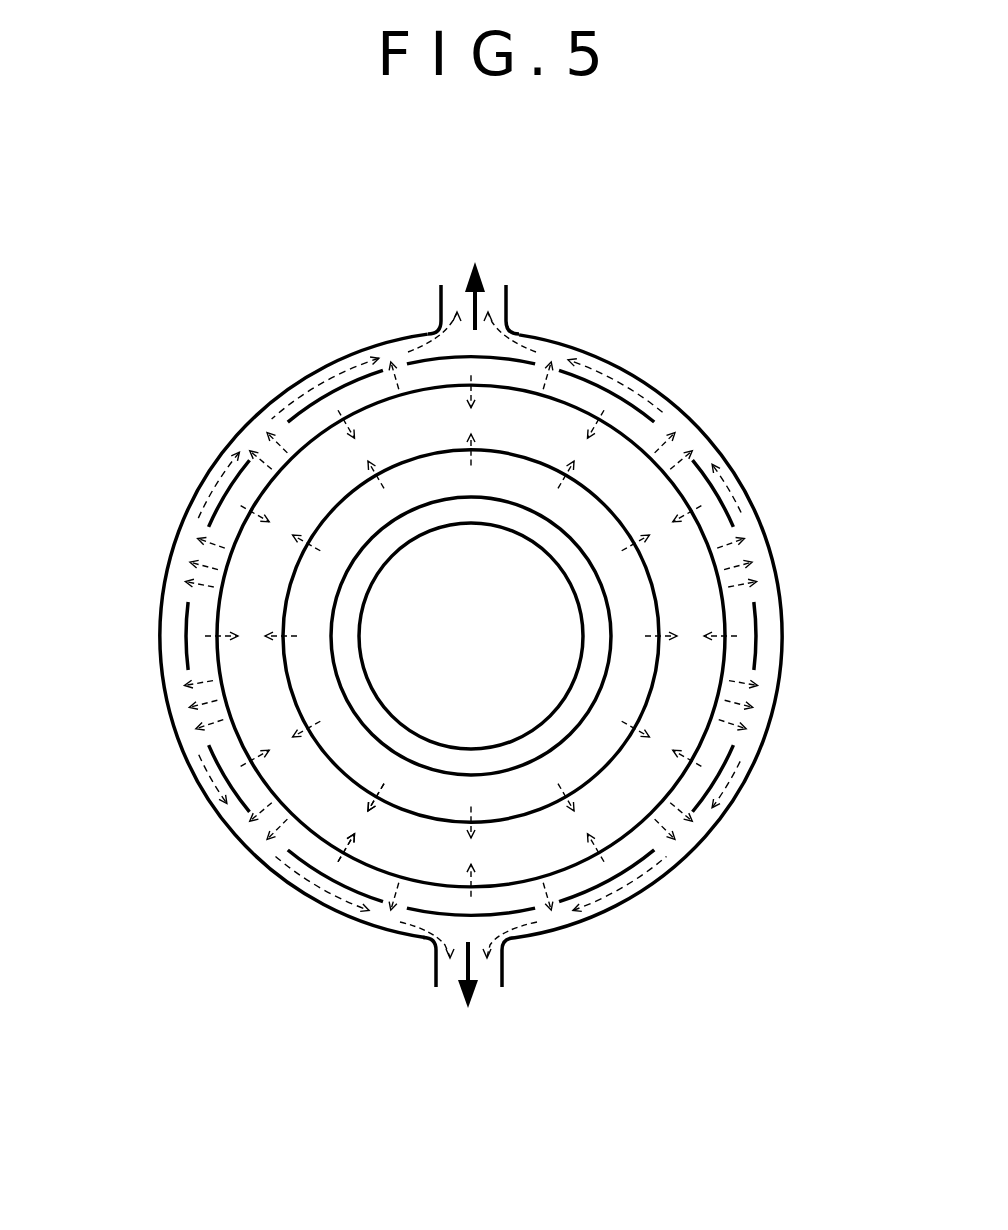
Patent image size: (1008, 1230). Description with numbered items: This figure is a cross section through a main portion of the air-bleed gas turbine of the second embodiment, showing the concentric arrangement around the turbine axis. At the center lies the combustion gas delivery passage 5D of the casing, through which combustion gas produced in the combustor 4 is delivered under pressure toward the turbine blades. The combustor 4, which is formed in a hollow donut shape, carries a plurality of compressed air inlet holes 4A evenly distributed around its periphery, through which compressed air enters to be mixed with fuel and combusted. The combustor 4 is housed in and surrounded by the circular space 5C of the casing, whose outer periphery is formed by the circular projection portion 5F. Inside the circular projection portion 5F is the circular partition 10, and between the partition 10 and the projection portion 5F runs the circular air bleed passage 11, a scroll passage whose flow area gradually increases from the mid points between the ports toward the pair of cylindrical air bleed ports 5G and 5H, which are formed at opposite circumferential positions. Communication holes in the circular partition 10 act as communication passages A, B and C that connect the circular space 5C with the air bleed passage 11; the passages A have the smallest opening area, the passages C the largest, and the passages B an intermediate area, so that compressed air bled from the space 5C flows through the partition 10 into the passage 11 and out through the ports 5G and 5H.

The combustor 4 is at (582, 402).
The compressed air inlet holes 4A is at (378, 802).
The circular space 5C is at (740, 654).
The combustion gas delivery passage 5D is at (561, 742).
The circular projection portion 5F is at (738, 462).
The air bleed port 5G is at (507, 306).
The air bleed port 5H is at (502, 970).
The circular partition 10 is at (768, 629).
The circular air bleed passage 11 is at (179, 619).
The communication passage A is at (396, 352).
The communication passage B is at (263, 435).
The communication passage C is at (185, 541).